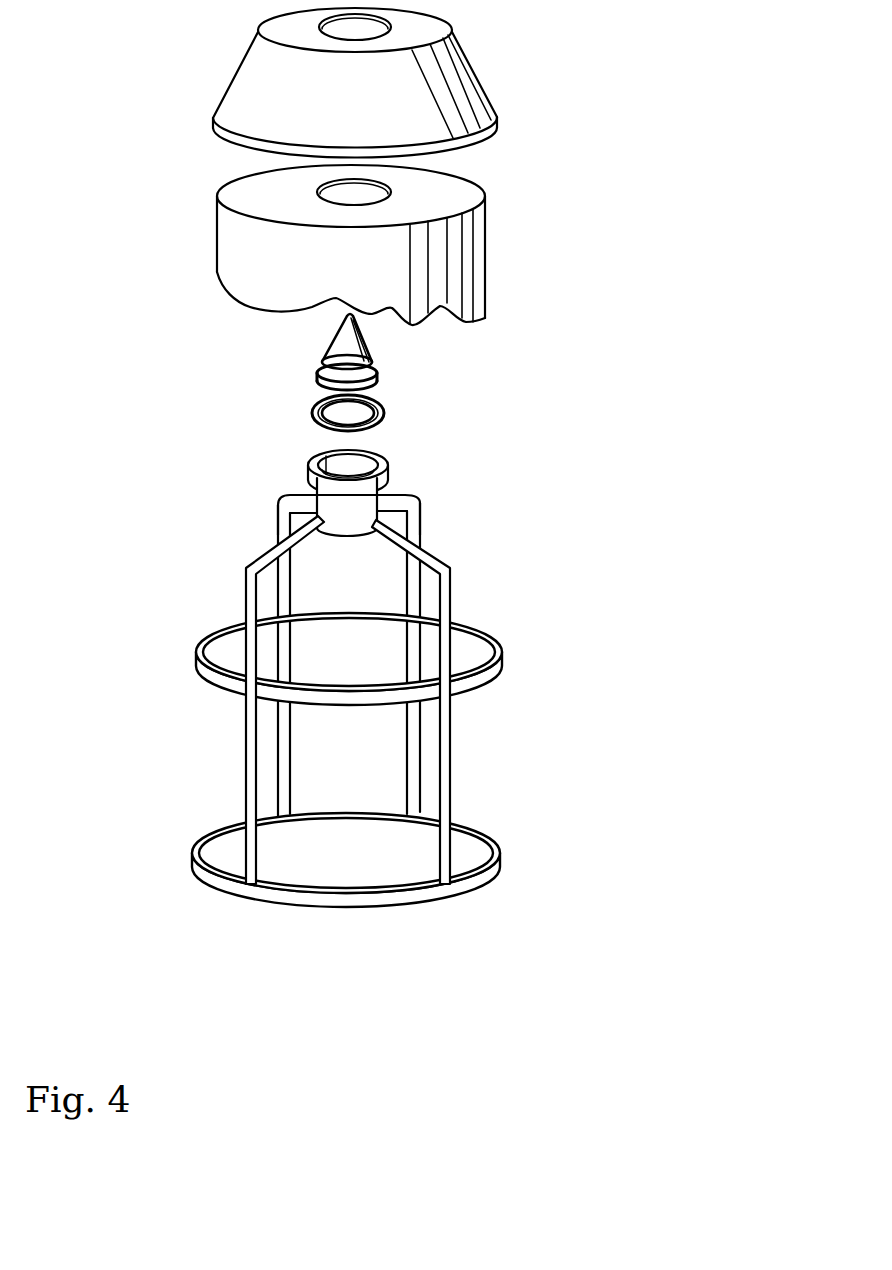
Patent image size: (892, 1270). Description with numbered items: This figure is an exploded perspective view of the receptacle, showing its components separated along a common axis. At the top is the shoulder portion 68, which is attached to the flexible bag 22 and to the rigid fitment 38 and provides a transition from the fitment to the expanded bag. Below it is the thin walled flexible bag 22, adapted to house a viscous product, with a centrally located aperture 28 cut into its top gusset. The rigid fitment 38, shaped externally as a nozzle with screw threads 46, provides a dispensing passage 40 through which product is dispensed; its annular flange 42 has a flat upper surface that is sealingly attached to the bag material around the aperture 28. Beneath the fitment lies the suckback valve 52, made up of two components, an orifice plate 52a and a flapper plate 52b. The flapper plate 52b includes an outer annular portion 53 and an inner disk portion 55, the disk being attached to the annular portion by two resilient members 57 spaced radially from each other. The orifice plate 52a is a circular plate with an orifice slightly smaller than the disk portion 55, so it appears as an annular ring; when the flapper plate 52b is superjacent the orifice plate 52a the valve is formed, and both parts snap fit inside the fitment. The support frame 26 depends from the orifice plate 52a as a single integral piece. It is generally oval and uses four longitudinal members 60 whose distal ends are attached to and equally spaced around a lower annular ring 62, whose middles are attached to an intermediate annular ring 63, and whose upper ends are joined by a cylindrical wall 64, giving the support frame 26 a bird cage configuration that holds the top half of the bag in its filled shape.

The shoulder portion 68 is at (452, 76).
The flexible bag 22 is at (391, 237).
The centrally located aperture 28 is at (378, 200).
The rigid fitment 38 is at (354, 343).
The dispensing passage 40 is at (345, 316).
The screw threads 46 is at (376, 360).
The annular flange 42 is at (320, 375).
The suckback valve 52 is at (440, 456).
The orifice plate 52a is at (418, 470).
The flapper plate 52b is at (415, 416).
The outer annular portion 53 is at (372, 404).
The inner disk portion 55 is at (375, 412).
The resilient members 57 is at (318, 409).
The support frame 26 is at (454, 701).
The longitudinal members 60 is at (366, 705).
The intermediate annular ring 63 is at (392, 622).
The lower annular ring 62 is at (315, 812).
The cylindrical wall 64 is at (411, 507).